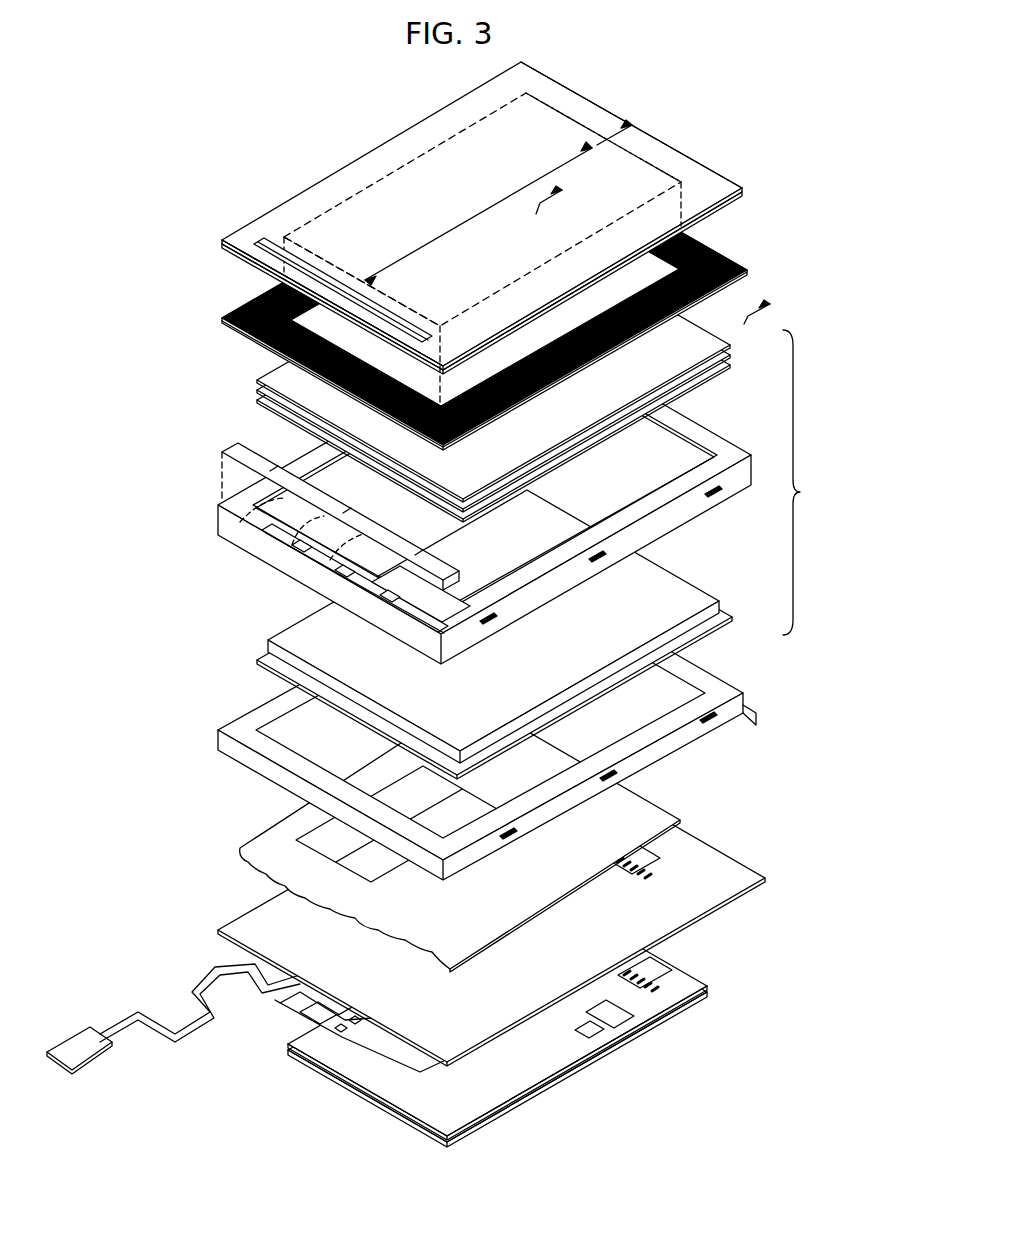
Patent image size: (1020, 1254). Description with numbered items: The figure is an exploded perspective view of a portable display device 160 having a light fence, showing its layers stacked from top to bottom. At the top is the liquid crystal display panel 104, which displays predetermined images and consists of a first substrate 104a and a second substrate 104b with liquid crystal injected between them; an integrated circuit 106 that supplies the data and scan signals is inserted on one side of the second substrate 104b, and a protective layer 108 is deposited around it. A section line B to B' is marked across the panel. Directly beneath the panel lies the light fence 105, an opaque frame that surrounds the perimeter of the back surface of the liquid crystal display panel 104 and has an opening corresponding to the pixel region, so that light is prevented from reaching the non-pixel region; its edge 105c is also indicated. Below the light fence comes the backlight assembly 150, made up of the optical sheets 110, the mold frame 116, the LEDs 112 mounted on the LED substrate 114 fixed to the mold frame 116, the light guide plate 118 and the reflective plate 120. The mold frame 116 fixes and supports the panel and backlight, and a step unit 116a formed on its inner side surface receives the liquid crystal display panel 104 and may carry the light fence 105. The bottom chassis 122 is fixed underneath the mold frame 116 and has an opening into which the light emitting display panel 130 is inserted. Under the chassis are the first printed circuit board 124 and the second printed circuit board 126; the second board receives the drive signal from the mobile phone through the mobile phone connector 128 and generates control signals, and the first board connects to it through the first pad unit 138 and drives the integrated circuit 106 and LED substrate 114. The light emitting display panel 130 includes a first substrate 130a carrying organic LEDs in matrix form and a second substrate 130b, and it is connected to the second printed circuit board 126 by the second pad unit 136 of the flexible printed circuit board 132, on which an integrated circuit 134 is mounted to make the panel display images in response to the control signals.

The portable display device 160 is at (232, 105).
The liquid crystal display panel 104 is at (214, 242).
The first substrate 104a is at (743, 190).
The second substrate 104b is at (744, 196).
The integrated circuit 106 is at (258, 243).
The protective layer 108 is at (237, 240).
The light fence 105 is at (232, 306).
The frame edge 105c is at (258, 338).
The optical sheets 110 is at (244, 380).
The LEDs 112 is at (380, 596).
The LED substrate 114 is at (365, 584).
The mold frame 116 is at (718, 440).
The step unit 116a is at (300, 448).
The light guide plate 118 is at (268, 641).
The reflective plate 120 is at (258, 661).
The bottom chassis 122 is at (735, 670).
The first printed circuit board 124 is at (243, 850).
The second printed circuit board 126 is at (240, 930).
The mobile phone connector 128 is at (100, 1058).
The light emitting display panel 130 is at (282, 1043).
The first substrate 130a is at (596, 1044).
The second substrate 130b is at (562, 1078).
The flexible printed circuit board 132 is at (610, 1008).
The integrated circuit 134 is at (600, 1028).
The second pad unit 136 is at (664, 980).
The first pad unit 138 is at (655, 868).
The backlight assembly 150 is at (811, 482).
The section line B is at (558, 196).
The section line B' is at (768, 308).